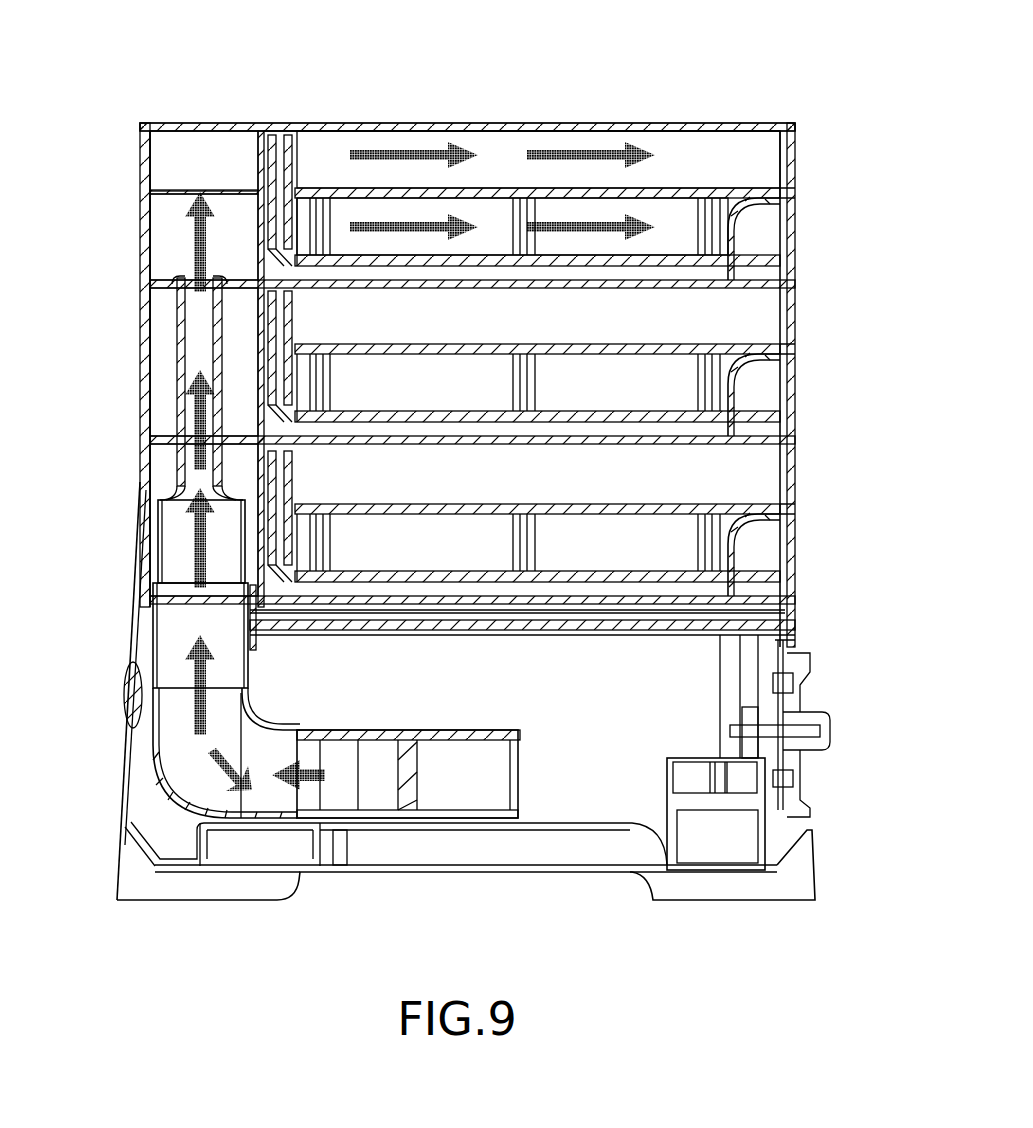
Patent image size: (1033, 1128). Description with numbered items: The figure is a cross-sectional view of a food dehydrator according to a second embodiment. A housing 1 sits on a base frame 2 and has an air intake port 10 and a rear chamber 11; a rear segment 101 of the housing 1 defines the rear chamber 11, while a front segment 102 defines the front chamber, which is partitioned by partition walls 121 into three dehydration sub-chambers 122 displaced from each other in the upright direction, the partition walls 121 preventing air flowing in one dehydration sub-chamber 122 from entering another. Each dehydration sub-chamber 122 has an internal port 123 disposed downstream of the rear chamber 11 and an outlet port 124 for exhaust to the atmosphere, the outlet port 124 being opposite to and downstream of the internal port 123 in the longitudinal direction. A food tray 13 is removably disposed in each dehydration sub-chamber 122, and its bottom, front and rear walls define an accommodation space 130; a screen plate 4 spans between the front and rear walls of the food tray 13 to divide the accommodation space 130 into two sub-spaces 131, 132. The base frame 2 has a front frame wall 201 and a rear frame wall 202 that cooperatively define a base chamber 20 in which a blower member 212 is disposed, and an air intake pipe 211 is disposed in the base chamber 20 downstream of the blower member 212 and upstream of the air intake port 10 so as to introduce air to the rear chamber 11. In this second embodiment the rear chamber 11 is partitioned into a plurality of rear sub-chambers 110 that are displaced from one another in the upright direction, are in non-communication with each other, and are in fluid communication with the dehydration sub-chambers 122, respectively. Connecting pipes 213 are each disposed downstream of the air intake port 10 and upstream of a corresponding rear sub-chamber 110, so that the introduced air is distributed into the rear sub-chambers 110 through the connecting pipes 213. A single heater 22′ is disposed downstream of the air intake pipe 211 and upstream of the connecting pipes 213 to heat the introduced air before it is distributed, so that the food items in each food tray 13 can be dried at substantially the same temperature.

The housing 1 is at (620, 110).
The base frame 2 is at (132, 605).
The screen plate 4 is at (722, 200).
The air intake port 10 is at (257, 630).
The rear chamber 11 is at (172, 147).
The food tray 13 is at (783, 187).
The base chamber 20 is at (680, 688).
The heater 22′ is at (172, 625).
The rear segment 101 is at (238, 124).
The front segment 102 is at (415, 124).
The rear sub-chamber 110 is at (183, 212).
The partition wall 121 is at (772, 282).
The dehydration sub-chamber 122 is at (768, 222).
The internal port 123 is at (260, 178).
The outlet port 124 is at (790, 255).
The accommodation space 130 is at (497, 55).
The sub-space 131 is at (542, 145).
The sub-space 132 is at (497, 210).
The front frame wall 201 is at (785, 628).
The rear frame wall 202 is at (130, 760).
The air intake pipe 211 is at (165, 783).
The blower member 212 is at (412, 780).
The connecting pipe 213 is at (177, 298).